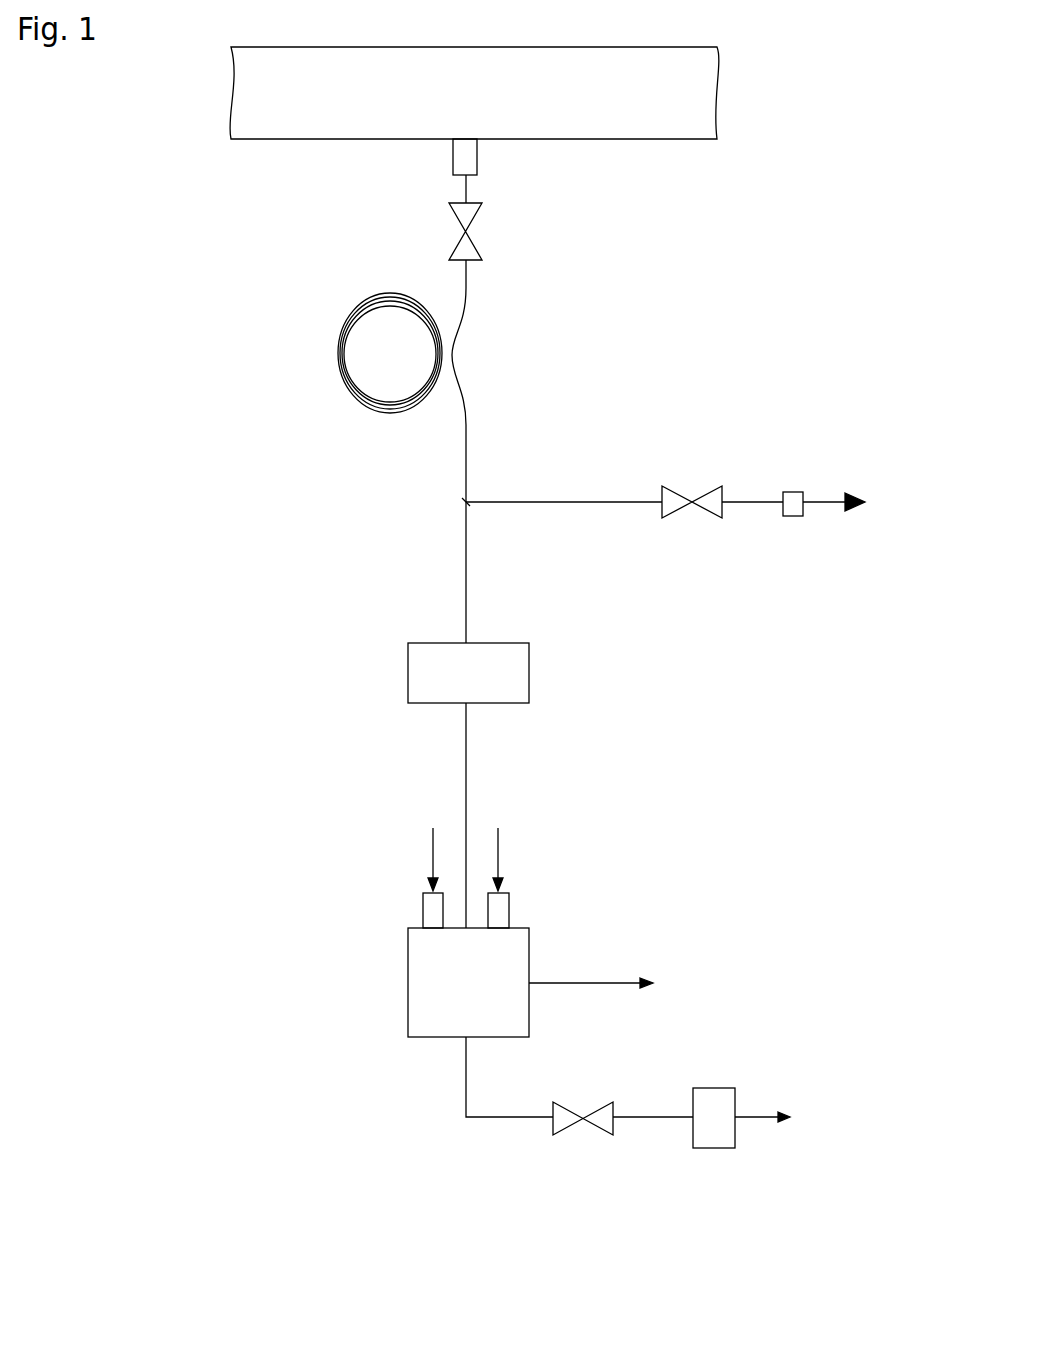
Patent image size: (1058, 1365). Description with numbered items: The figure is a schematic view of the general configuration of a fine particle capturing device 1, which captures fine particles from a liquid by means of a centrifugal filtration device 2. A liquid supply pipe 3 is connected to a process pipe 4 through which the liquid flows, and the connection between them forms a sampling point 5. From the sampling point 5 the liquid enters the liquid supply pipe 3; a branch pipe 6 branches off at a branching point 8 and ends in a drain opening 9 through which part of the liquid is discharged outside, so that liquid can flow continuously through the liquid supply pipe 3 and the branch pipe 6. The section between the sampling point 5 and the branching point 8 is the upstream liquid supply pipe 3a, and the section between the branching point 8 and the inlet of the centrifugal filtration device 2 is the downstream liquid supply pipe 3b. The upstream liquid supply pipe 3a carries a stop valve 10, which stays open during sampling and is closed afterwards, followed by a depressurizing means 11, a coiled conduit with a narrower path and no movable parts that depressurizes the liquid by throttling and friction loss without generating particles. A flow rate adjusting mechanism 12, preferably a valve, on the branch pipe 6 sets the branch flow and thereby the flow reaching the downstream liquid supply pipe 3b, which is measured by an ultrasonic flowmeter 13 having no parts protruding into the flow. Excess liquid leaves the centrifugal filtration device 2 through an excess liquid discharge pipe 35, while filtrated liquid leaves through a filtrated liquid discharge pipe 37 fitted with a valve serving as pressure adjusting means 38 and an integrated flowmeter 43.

The fine particle capturing device 1 is at (633, 277).
The centrifugal filtration device 2 is at (408, 966).
The liquid supply pipe 3 is at (407, 534).
The upstream liquid supply pipe 3a is at (465, 478).
The downstream liquid supply pipe 3b is at (433, 572).
The process pipe 4 is at (307, 140).
The sampling point 5 is at (478, 152).
The branch pipe 6 is at (562, 501).
The branching point 8 is at (467, 500).
The drain opening 9 is at (793, 491).
The stop valve 10 is at (468, 230).
The depressurizing means 11 is at (343, 332).
The flow rate adjusting mechanism 12 is at (690, 500).
The ultrasonic flowmeter 13 is at (408, 668).
The excess liquid discharge pipe 35 is at (590, 980).
The filtrated liquid discharge pipe 37 is at (498, 1120).
The pressure adjusting means 38 is at (570, 1108).
The integrated flowmeter 43 is at (712, 1088).